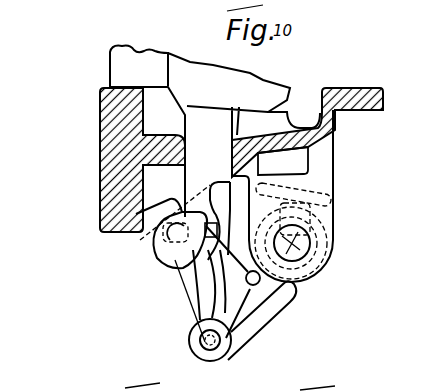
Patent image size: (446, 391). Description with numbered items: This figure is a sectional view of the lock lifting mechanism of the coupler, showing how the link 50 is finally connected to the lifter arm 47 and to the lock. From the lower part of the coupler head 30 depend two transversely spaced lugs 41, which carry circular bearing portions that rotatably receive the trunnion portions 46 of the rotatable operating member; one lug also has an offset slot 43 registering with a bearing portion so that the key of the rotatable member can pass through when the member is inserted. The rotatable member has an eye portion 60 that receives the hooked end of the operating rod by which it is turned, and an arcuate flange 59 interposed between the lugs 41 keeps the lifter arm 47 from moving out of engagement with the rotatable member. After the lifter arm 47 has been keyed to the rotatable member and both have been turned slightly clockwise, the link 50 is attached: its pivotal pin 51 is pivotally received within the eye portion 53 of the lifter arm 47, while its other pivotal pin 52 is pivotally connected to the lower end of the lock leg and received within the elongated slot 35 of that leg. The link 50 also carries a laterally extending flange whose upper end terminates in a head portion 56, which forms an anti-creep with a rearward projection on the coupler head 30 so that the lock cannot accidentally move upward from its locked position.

The coupler head 30 is at (100, 131).
The lugs 41 is at (322, 152).
The arcuate flange 59 is at (332, 181).
The offset slot 43 is at (310, 208).
The trunnion portions 46 is at (318, 254).
The lifter arm 47 is at (278, 312).
The eye portion 60 is at (247, 280).
The elongated slot 35 is at (208, 250).
The head portion 56 is at (150, 236).
The pivotal pin 52 is at (180, 217).
The link 50 is at (195, 289).
The eye portion 53 is at (189, 340).
The pivotal pin 51 is at (209, 347).